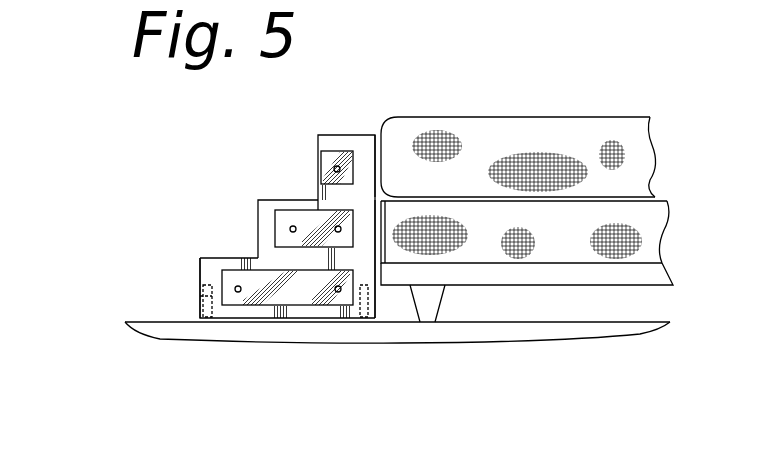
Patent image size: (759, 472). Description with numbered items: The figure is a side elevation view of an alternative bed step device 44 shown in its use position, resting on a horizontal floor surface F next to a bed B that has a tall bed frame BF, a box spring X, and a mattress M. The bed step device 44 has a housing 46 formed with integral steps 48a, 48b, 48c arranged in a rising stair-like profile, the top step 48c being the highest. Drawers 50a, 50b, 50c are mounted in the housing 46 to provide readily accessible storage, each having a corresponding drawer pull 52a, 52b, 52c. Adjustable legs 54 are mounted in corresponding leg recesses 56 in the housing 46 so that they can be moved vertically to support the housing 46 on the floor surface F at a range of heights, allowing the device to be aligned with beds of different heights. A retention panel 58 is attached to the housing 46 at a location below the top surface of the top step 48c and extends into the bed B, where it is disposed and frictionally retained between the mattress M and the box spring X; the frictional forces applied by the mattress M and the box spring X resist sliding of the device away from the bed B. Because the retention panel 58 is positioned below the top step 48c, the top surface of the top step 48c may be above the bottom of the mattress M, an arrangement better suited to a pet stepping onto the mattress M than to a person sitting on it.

The bed step device 44 is at (146, 171).
The housing 46 is at (363, 235).
The step 48a is at (223, 257).
The step 48b is at (300, 198).
The top step 48c is at (369, 135).
The drawer 50a is at (305, 304).
The drawer 50b is at (290, 229).
The drawer 50c is at (337, 166).
The drawer pull 52a is at (338, 290).
The drawer pull 52b is at (328, 223).
The drawer pull 52c is at (336, 168).
The adjustable legs 54 is at (207, 322).
The leg recesses 56 is at (200, 296).
The retention panel 58 is at (412, 193).
The bed B is at (518, 125).
The mattress M is at (587, 147).
The box spring X is at (578, 257).
The bed frame BF is at (438, 294).
The floor surface F is at (672, 325).